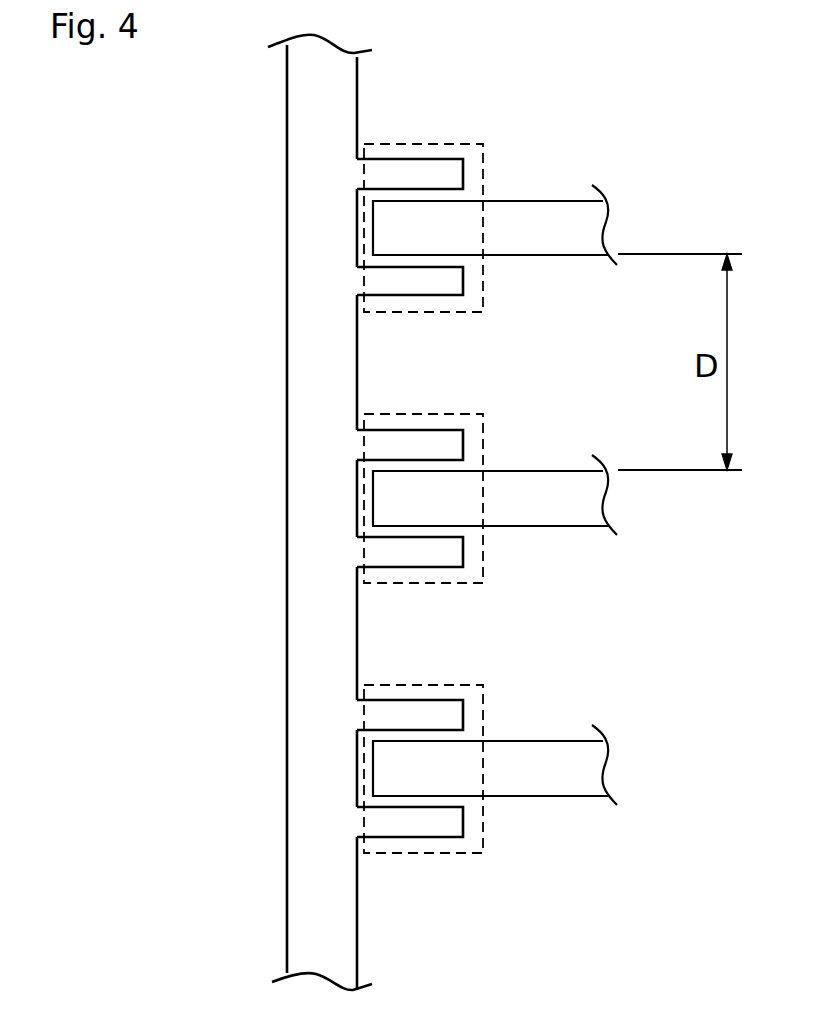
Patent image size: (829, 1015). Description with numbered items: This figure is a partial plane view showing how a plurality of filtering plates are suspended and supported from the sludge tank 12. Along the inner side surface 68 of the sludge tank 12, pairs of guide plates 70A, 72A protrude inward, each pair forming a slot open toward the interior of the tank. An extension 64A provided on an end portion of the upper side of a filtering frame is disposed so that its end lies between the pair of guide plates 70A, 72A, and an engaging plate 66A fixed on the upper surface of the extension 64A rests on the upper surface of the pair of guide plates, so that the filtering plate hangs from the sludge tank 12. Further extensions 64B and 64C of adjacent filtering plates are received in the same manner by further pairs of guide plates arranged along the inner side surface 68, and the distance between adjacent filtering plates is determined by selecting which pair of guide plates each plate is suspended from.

The sludge tank 12 is at (283, 373).
The inner side surface 68 is at (358, 75).
The engaging plate 66A is at (477, 144).
The guide plate 70A is at (414, 176).
The guide plate 72A is at (402, 283).
The extension 64A is at (560, 200).
The extension 64B is at (525, 471).
The extension 64C is at (536, 744).